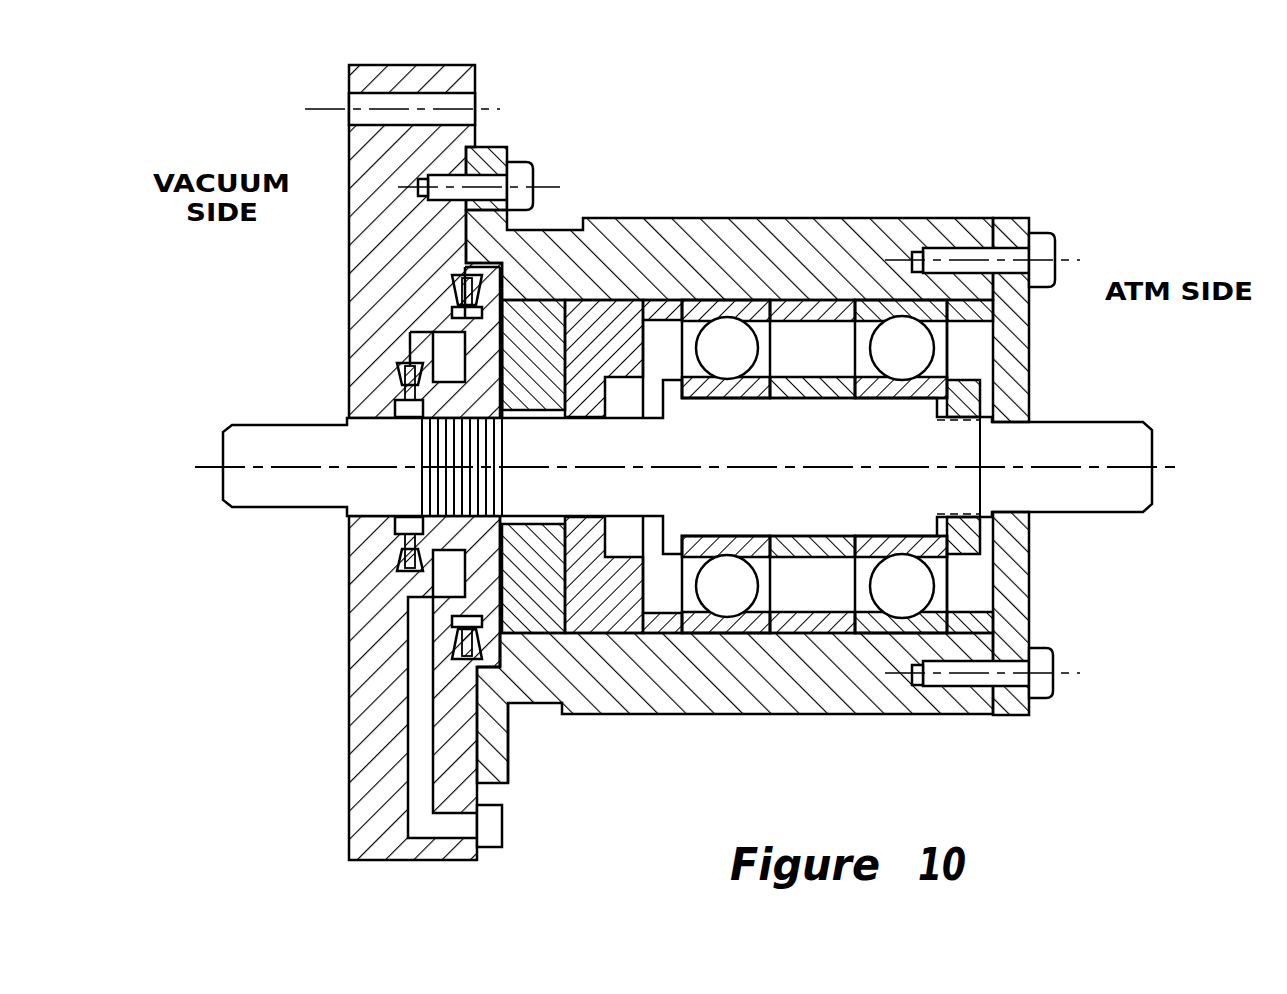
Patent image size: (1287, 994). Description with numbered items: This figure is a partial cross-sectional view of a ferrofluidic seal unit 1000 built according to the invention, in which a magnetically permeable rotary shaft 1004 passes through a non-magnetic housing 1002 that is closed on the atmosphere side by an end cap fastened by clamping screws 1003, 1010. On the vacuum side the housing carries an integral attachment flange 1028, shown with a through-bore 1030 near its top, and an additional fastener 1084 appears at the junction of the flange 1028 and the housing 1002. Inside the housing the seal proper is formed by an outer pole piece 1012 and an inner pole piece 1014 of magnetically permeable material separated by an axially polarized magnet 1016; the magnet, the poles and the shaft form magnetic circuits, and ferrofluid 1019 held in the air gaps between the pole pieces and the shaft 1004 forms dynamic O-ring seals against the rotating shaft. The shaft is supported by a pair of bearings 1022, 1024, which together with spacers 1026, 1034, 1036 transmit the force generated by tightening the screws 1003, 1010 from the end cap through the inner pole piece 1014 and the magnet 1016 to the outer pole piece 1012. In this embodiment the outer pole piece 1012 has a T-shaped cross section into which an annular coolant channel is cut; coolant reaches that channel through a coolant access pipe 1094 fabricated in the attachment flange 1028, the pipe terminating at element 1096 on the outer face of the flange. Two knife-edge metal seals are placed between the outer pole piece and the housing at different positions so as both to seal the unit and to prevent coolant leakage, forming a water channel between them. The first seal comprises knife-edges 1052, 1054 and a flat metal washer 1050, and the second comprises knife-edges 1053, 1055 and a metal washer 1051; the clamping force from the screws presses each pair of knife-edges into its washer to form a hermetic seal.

The ferrofluidic seal unit 1000 is at (1018, 566).
The housing 1002 is at (730, 700).
The clamping screw 1003 is at (1042, 242).
The rotary shaft 1004 is at (1082, 438).
The clamping screw 1010 is at (1045, 657).
The outer pole piece 1012 is at (440, 344).
The inner pole piece 1014 is at (628, 322).
The magnet 1016 is at (547, 603).
The ferrofluid 1019 is at (480, 463).
The bearing 1022 is at (745, 310).
The bearing 1024 is at (882, 310).
The spacer 1026 is at (663, 627).
The attachment flange 1028 is at (362, 792).
The bolt hole 1030 is at (362, 103).
The spacer 1034 is at (818, 620).
The spacer 1036 is at (967, 620).
The metal washer 1050 is at (455, 298).
The metal washer 1051 is at (402, 392).
The knife-edge 1052 is at (400, 537).
The knife-edge 1053 is at (460, 630).
The knife-edge 1054 is at (512, 608).
The knife-edge 1055 is at (510, 703).
The bolt 1084 is at (522, 175).
The coolant access pipe 1094 is at (437, 577).
The plug 1096 is at (492, 830).